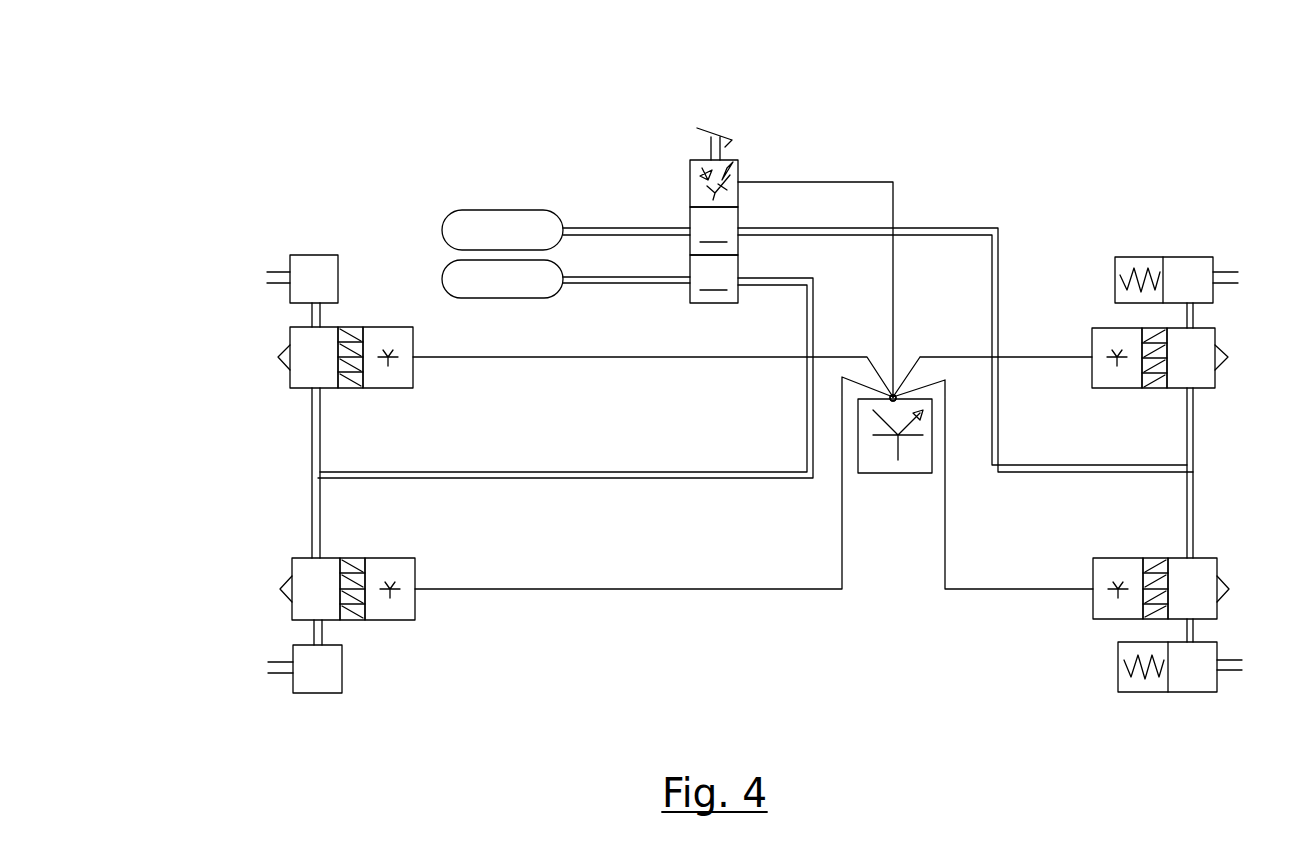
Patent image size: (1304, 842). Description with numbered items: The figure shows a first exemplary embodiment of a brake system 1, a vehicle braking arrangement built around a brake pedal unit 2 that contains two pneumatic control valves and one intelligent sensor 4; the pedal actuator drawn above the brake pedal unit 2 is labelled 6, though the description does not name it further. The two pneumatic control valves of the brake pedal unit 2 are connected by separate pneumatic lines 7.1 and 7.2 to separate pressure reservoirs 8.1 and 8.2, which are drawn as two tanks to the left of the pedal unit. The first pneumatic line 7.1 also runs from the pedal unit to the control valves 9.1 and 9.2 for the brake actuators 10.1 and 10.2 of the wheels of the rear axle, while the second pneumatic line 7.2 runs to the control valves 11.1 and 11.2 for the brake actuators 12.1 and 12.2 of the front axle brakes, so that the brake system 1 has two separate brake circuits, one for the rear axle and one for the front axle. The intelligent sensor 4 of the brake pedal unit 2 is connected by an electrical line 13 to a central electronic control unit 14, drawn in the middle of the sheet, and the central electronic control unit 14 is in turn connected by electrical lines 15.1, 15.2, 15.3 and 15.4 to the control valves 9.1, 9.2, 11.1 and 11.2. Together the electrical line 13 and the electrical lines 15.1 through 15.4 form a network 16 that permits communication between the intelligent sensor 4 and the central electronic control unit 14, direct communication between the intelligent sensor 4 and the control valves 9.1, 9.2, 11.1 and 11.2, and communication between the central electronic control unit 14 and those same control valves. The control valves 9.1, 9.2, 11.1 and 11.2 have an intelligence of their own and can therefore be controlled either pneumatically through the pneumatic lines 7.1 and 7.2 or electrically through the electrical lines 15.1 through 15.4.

The brake system 1 is at (203, 117).
The brake pedal unit 2 is at (738, 108).
The intelligent sensor 4 is at (700, 175).
The brake pedal 6 is at (728, 137).
The pneumatic line 7.1 is at (585, 230).
The pneumatic line 7.2 is at (640, 278).
The pressure reservoir 8.1 is at (482, 217).
The pressure reservoir 8.2 is at (508, 280).
The control valve 9.1 is at (1108, 335).
The control valve 9.2 is at (1113, 612).
The brake actuator 10.1 is at (1150, 262).
The brake actuator 10.2 is at (1188, 685).
The control valve 11.1 is at (385, 325).
The control valve 11.2 is at (372, 617).
The brake actuator 12.1 is at (313, 262).
The brake actuator 12.2 is at (320, 692).
The electrical line 13 is at (893, 180).
The central electronic control unit 14 is at (912, 468).
The electrical line 15.1 is at (1045, 357).
The electrical line 15.2 is at (1005, 589).
The electrical line 15.3 is at (637, 357).
The electrical line 15.4 is at (630, 589).
The network 16 is at (893, 397).